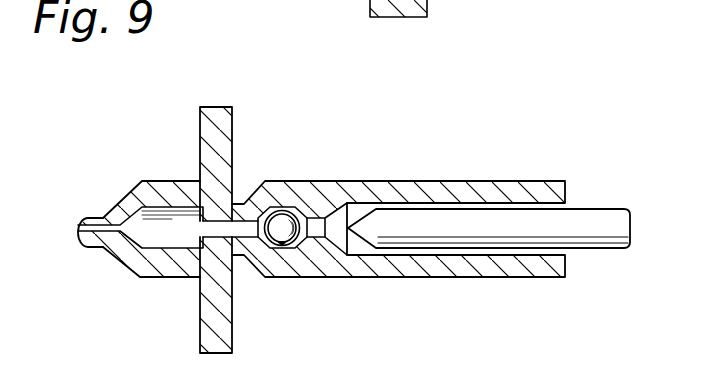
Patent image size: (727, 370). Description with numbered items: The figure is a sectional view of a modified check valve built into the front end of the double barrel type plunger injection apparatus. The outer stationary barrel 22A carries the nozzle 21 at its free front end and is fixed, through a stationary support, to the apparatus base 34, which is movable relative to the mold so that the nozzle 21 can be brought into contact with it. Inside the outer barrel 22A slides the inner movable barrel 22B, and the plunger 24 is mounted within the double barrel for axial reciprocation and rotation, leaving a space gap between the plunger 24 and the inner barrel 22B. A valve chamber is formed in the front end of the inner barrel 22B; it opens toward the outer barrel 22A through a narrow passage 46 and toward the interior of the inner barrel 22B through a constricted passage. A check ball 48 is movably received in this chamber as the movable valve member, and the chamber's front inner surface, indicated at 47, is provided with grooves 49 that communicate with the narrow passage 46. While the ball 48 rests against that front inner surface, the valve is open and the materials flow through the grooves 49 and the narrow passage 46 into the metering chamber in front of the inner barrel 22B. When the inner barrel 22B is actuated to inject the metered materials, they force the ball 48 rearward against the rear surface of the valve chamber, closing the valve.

The nozzle 21 is at (89, 249).
The outer stationary barrel 22A is at (152, 278).
The inner movable barrel 22B is at (320, 182).
The plunger 24 is at (592, 246).
The base 34 is at (200, 132).
The narrow passage 46 is at (253, 238).
The valve seat 47 is at (292, 250).
The check ball 48 is at (279, 211).
The grooves 49 is at (261, 206).